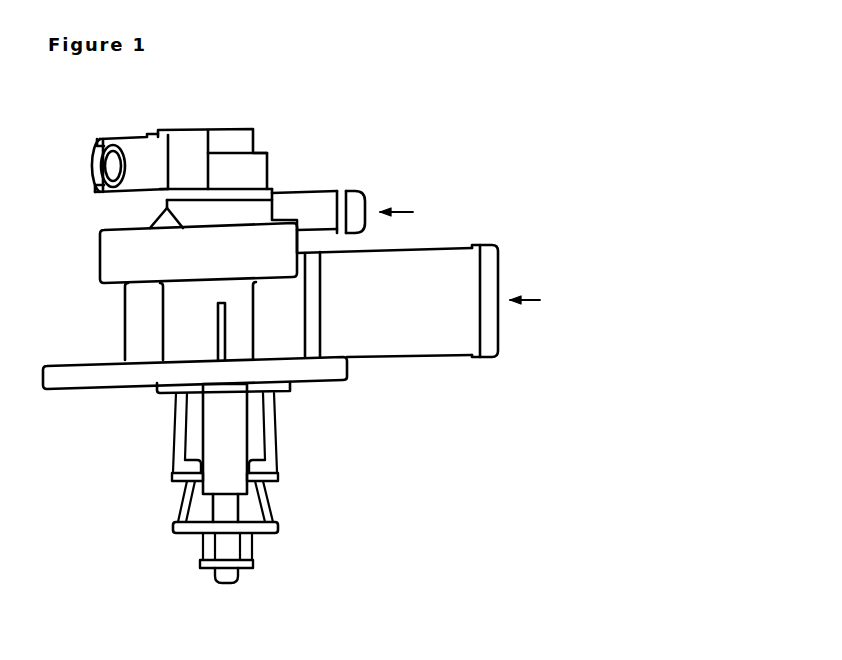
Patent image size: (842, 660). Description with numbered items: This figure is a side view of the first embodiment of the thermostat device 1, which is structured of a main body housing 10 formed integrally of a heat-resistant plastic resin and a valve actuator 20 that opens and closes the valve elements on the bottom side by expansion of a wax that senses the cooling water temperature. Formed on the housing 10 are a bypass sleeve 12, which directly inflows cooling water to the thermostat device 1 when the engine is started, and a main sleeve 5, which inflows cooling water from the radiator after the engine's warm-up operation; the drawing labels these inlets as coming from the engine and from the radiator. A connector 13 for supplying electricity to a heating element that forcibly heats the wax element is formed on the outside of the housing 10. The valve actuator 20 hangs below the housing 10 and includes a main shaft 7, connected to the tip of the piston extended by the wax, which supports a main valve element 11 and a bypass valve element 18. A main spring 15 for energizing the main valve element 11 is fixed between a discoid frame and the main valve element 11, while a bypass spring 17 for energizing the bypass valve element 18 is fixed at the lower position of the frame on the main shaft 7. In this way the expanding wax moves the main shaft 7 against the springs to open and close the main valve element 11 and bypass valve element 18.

The thermostat device 1 is at (413, 153).
The main sleeve 5 is at (443, 357).
The main shaft 7 is at (233, 440).
The main body housing 10 is at (265, 150).
The main valve element 11 is at (267, 477).
The bypass sleeve 12 is at (298, 193).
The connector 13 is at (147, 150).
The main spring 15 is at (173, 453).
The bypass spring 17 is at (180, 513).
The bypass valve element 18 is at (253, 563).
The valve actuator 20 is at (160, 420).